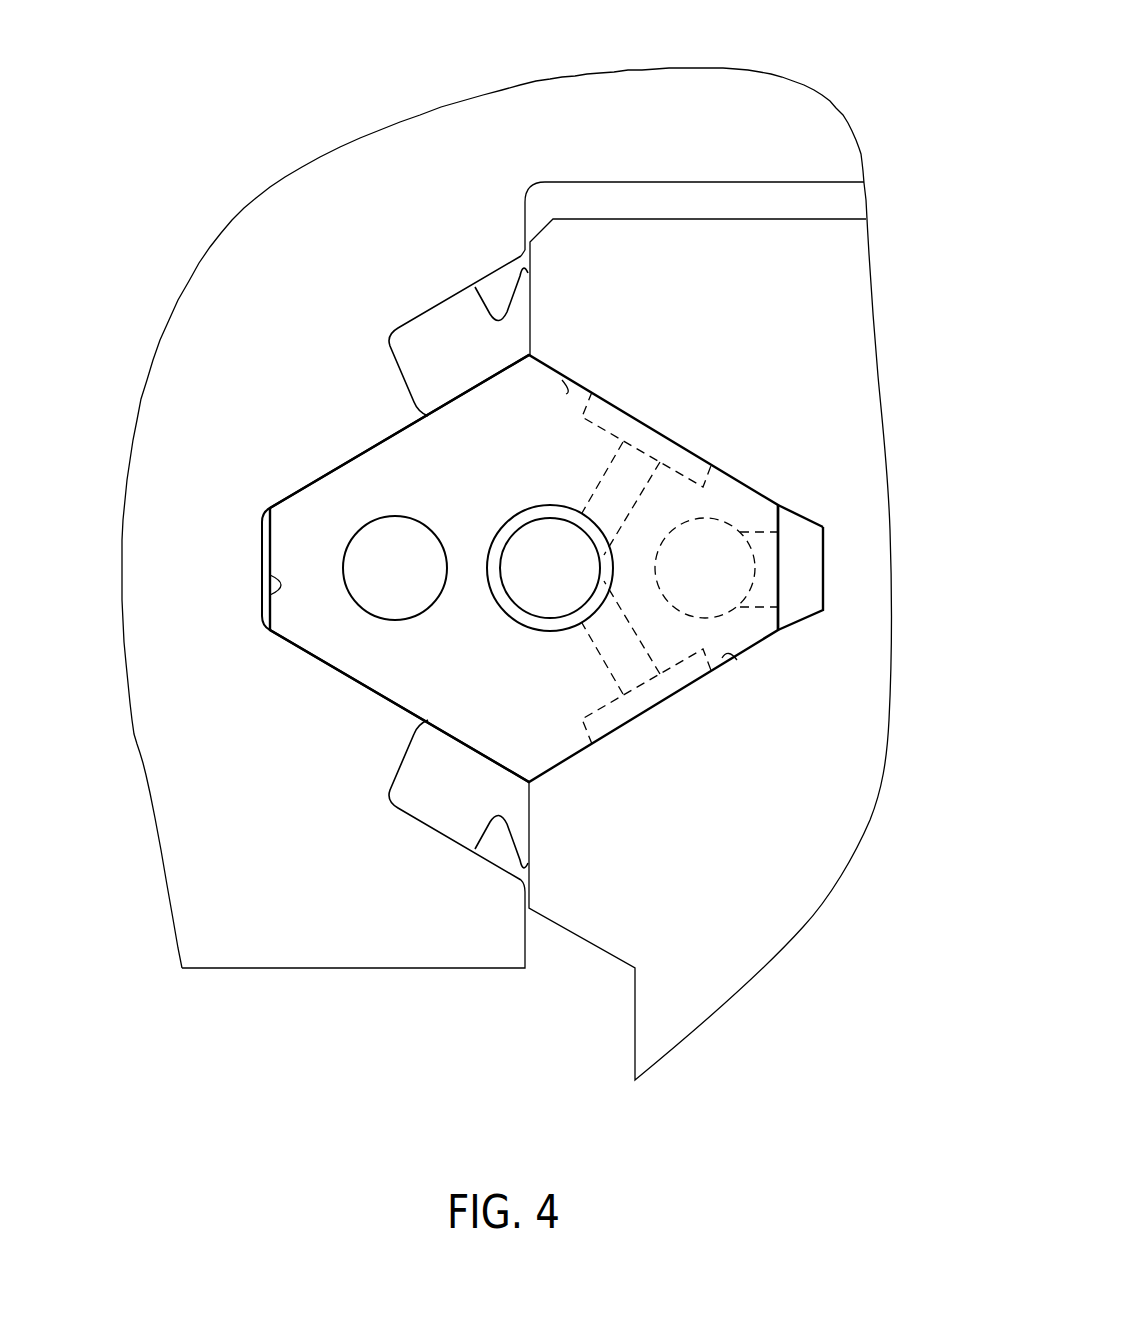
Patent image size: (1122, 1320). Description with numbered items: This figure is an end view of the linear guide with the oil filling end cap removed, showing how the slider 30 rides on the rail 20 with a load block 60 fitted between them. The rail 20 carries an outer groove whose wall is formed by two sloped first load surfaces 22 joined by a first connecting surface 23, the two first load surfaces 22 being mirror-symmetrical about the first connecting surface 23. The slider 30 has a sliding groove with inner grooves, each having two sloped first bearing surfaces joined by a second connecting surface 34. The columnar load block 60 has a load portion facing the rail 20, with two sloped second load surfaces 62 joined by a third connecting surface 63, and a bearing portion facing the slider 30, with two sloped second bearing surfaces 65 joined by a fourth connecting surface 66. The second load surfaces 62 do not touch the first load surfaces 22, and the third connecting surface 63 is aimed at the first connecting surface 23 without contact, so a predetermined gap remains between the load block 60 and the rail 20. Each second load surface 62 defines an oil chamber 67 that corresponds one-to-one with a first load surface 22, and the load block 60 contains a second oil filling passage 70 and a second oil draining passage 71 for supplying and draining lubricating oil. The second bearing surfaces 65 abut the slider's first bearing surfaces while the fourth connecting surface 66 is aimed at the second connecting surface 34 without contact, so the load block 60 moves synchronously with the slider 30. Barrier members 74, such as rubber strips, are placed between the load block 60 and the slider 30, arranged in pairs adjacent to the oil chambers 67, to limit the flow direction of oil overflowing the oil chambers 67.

The rail 20 is at (838, 842).
The slider 30 is at (760, 112).
The load block 60 is at (380, 425).
The second bearing surface 65 is at (320, 472).
The second connecting surface 34 is at (262, 567).
The fourth connecting surface 66 is at (270, 595).
The first load surface 22 is at (789, 506).
The third connecting surface 63 is at (781, 552).
The first connecting surface 23 is at (823, 560).
The second oil filling passage 70 is at (532, 595).
The second oil draining passage 71 is at (660, 593).
The second load surface 62 is at (565, 390).
The oil chamber 67 is at (669, 469).
The barrier member 74 is at (453, 330).